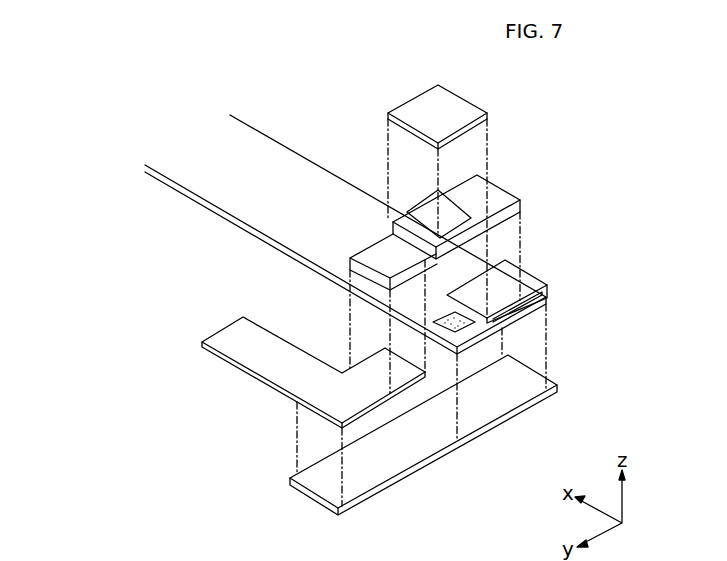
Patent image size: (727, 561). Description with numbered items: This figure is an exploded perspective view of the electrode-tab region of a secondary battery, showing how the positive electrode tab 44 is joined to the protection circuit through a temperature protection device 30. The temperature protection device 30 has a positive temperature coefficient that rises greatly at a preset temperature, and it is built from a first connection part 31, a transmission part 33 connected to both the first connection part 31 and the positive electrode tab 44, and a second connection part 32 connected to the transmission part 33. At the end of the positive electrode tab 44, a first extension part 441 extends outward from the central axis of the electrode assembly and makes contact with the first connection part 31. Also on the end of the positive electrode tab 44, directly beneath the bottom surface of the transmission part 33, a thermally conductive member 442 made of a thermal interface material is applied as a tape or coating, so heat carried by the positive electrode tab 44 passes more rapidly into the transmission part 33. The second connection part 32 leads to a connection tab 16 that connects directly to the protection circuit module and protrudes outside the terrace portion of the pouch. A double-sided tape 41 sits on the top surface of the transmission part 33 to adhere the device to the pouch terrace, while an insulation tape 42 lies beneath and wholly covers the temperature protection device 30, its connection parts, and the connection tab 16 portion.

The connection tab 16 is at (265, 368).
The temperature protection device 30 is at (487, 268).
The first connection part 31 is at (500, 193).
The second connection part 32 is at (408, 262).
The transmission part 33 is at (448, 213).
The double-sided tape 41 is at (457, 107).
The insulation tape 42 is at (407, 455).
The positive electrode tab 44 is at (237, 207).
The first extension part 441 is at (530, 272).
The thermally conductive member 442 is at (470, 327).